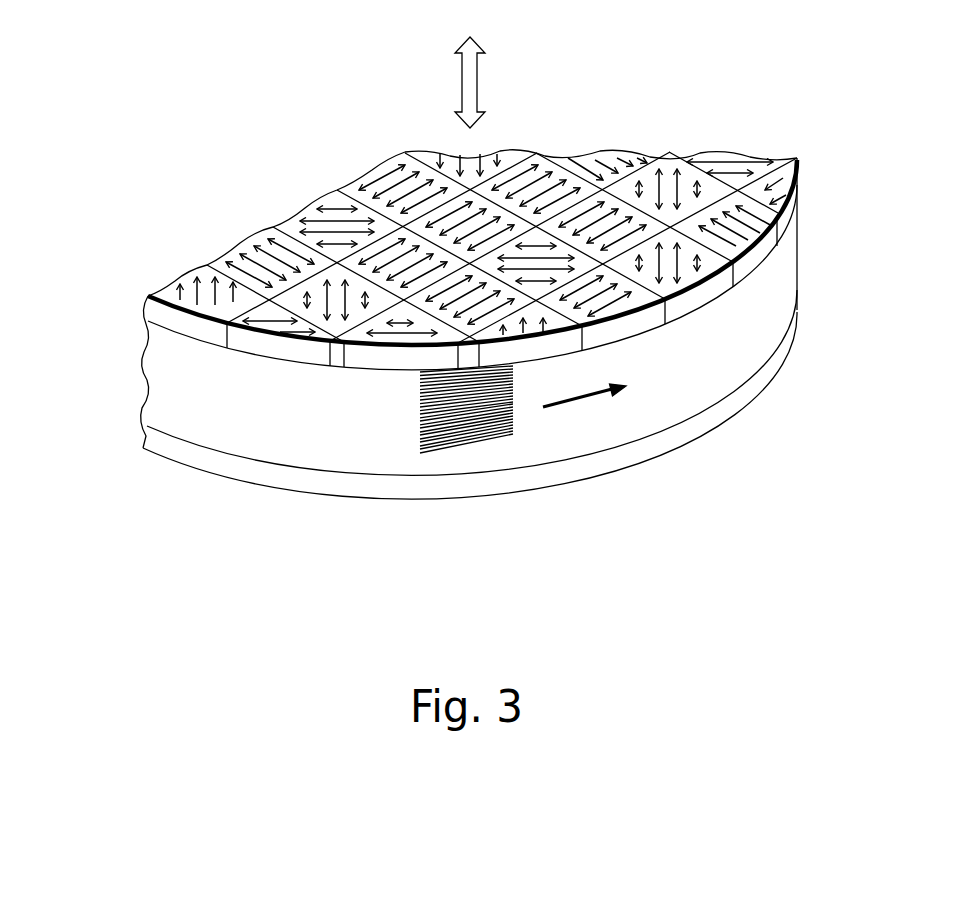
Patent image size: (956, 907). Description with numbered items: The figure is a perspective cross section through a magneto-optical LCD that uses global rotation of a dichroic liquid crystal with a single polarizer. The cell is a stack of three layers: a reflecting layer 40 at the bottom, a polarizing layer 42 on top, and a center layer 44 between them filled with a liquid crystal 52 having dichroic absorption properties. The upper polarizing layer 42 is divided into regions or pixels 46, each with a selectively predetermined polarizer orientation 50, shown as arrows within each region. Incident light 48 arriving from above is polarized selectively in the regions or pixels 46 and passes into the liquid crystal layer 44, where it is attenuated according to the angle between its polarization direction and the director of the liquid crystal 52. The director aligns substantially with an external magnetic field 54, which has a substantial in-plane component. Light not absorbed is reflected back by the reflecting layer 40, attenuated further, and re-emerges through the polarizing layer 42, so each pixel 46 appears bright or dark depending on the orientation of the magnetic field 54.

The reflecting layer 40 is at (607, 460).
The polarizing layer 42 is at (752, 263).
The center layer 44 is at (118, 322).
The regions or pixels 46 is at (571, 180).
The incident light 48 is at (478, 80).
The polarizer orientation 50 is at (403, 183).
The liquid crystal 52 is at (417, 375).
The external magnetic field 54 is at (595, 400).